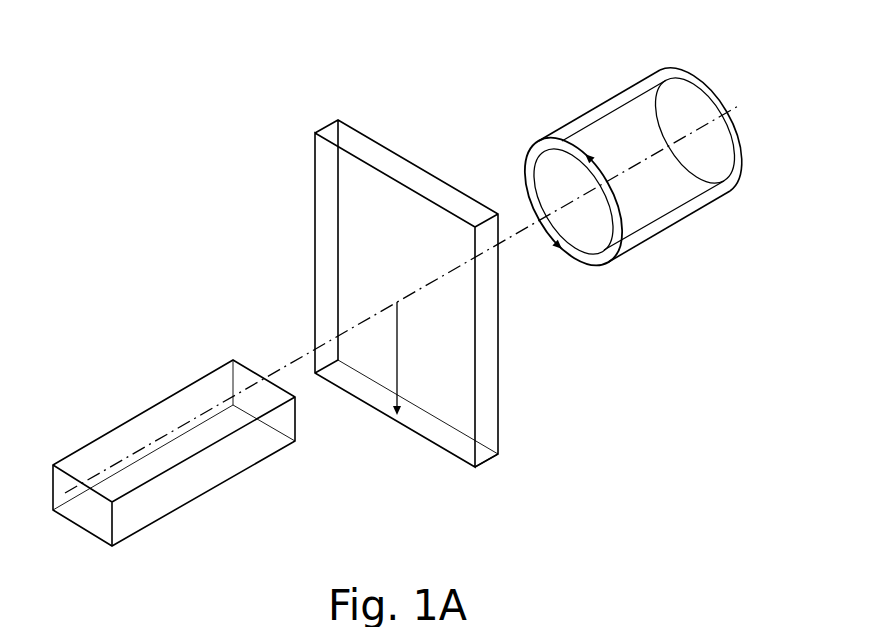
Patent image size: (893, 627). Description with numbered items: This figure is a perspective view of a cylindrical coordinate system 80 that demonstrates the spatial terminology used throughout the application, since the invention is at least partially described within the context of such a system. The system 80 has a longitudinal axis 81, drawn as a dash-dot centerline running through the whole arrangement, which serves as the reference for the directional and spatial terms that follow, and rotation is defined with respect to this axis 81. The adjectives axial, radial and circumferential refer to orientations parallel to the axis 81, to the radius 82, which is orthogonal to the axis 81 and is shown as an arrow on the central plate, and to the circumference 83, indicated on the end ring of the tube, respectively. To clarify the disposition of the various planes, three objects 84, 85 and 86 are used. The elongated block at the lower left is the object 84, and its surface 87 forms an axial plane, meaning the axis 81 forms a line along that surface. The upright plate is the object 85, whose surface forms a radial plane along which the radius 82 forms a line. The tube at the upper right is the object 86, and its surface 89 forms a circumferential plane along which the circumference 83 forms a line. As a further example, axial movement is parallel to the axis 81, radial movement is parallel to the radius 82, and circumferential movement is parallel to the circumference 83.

The cylindrical coordinate system 80 is at (245, 178).
The longitudinal axis 81 is at (328, 234).
The radius 82 is at (397, 335).
The circumference 83 is at (525, 165).
The object 84 is at (168, 515).
The object 85 is at (500, 477).
The object 86 is at (614, 149).
The surface 87 is at (148, 420).
The surface 89 is at (605, 102).